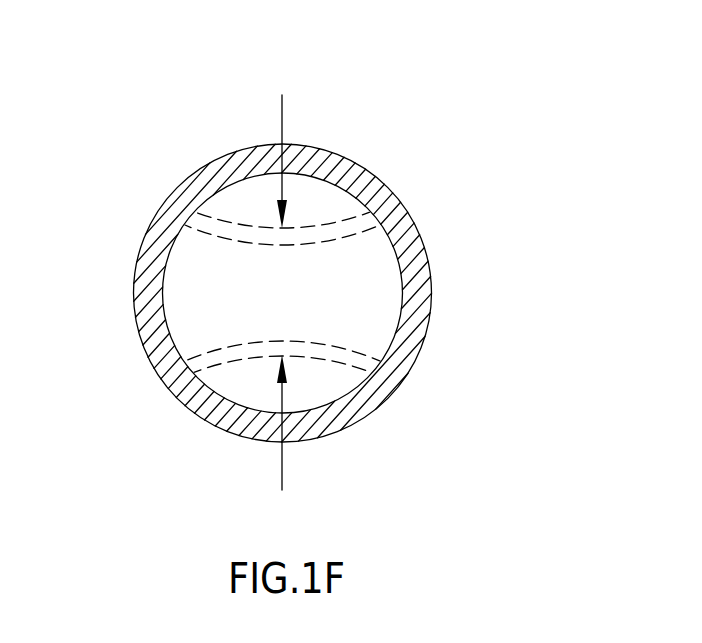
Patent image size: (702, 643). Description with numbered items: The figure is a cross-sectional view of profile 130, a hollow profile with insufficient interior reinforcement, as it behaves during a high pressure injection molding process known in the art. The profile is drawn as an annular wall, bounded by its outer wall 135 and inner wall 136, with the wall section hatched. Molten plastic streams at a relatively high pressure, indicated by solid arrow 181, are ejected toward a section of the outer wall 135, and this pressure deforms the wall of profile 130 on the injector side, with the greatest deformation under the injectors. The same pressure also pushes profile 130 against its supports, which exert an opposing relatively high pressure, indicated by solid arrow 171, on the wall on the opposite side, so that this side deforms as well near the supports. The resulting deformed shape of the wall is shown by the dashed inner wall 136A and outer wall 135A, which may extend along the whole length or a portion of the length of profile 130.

The profile 130 is at (345, 285).
The outer wall 135 is at (430, 281).
The inner wall 136 is at (398, 198).
The deformed outer wall 135A is at (178, 238).
The deformed inner wall 136A is at (185, 239).
The solid arrow indicating pressure P1 181 is at (283, 105).
The solid arrow indicating pressure P2 171 is at (283, 477).